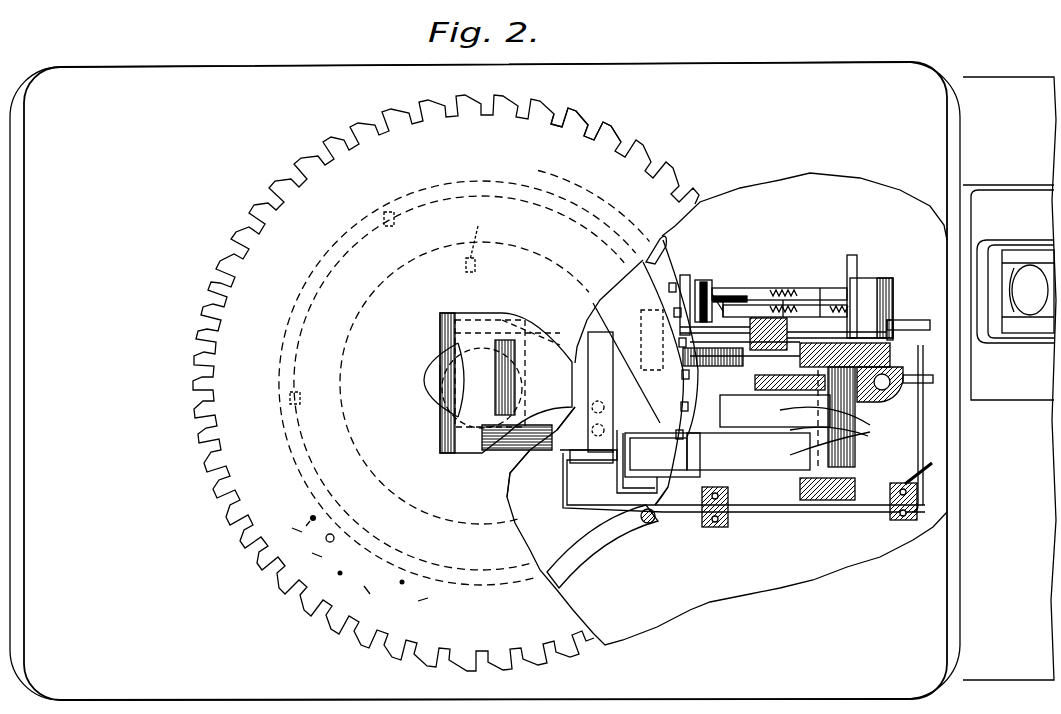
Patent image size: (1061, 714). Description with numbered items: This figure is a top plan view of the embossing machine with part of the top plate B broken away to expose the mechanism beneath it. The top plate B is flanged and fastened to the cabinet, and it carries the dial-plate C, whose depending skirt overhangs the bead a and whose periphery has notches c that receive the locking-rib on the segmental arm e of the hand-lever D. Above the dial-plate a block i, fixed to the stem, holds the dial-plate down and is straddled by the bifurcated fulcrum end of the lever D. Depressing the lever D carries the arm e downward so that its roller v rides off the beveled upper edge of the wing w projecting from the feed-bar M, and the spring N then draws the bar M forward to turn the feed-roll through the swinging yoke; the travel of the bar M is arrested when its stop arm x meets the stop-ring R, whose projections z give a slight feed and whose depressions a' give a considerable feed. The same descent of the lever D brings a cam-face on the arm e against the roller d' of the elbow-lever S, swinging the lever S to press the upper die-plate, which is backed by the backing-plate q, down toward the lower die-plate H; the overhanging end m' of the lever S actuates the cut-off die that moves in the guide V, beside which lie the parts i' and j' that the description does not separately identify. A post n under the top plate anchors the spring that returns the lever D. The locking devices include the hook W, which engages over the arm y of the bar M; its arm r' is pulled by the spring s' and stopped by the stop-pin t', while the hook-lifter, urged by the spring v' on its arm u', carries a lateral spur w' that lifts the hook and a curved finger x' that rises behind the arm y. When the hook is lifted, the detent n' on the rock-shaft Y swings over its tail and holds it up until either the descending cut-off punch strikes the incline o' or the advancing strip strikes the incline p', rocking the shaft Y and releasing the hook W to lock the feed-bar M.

The top plate B is at (485, 381).
The dial-plate C is at (600, 165).
The peripheral notches c is at (618, 105).
The projections z is at (444, 231).
The stop-ring R is at (478, 231).
The depressions a' is at (348, 317).
The hand-lever D is at (498, 383).
The block i is at (424, 405).
The bead a is at (620, 268).
The stop arm x is at (670, 372).
The wing w is at (682, 421).
The arm y is at (677, 323).
The arm j' is at (626, 363).
The guide V is at (637, 437).
The bracket i' is at (611, 481).
The overhanging end m' is at (713, 461).
The segmental arm e is at (732, 378).
The roller v is at (735, 342).
The elbow-lever S is at (832, 433).
The roller d' is at (875, 372).
The post n is at (933, 425).
The detent n' is at (918, 337).
The arm r' is at (866, 315).
The feed-bar M is at (900, 317).
The stop-pin t' is at (882, 295).
The arm u' is at (874, 274).
The locking-hook W is at (735, 296).
The finger x' is at (729, 266).
The lateral spur w' is at (754, 266).
The spring v' is at (803, 285).
The spring s' is at (833, 286).
The spring N is at (690, 283).
The rock-shaft Y is at (779, 507).
The incline p' is at (906, 463).
The lower die-plate H is at (603, 571).
The backing-plate q is at (530, 502).
The incline o' is at (549, 453).